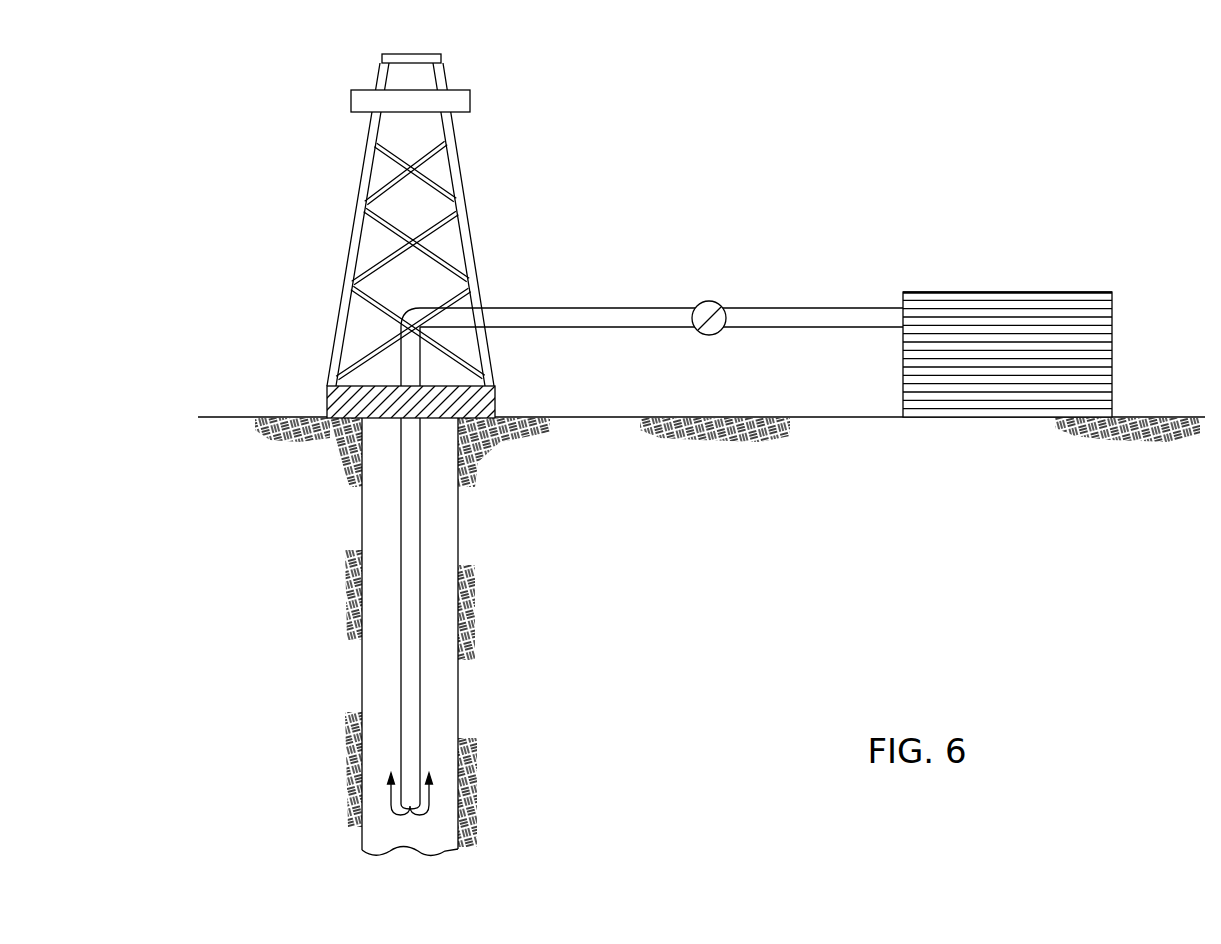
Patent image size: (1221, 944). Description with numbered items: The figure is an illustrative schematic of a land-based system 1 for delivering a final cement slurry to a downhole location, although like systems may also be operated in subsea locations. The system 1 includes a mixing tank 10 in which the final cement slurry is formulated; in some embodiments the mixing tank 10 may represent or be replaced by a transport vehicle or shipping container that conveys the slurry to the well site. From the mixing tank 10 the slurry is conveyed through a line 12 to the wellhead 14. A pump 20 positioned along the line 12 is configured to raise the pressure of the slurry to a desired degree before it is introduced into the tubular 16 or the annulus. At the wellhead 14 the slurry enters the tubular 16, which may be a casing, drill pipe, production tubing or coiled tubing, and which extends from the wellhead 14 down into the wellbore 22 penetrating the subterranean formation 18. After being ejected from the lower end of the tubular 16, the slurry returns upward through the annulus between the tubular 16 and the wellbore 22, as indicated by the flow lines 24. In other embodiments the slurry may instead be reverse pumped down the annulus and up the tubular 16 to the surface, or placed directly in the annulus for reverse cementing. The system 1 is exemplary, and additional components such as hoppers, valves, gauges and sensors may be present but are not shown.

The system 1 is at (262, 196).
The mixing tank 10 is at (1016, 291).
The line 12 is at (556, 307).
The wellhead 14 is at (326, 388).
The tubular 16 is at (421, 525).
The subterranean formation 18 is at (218, 634).
The pump 20 is at (703, 301).
The wellbore 22 is at (458, 705).
The flow lines 24 is at (389, 796).